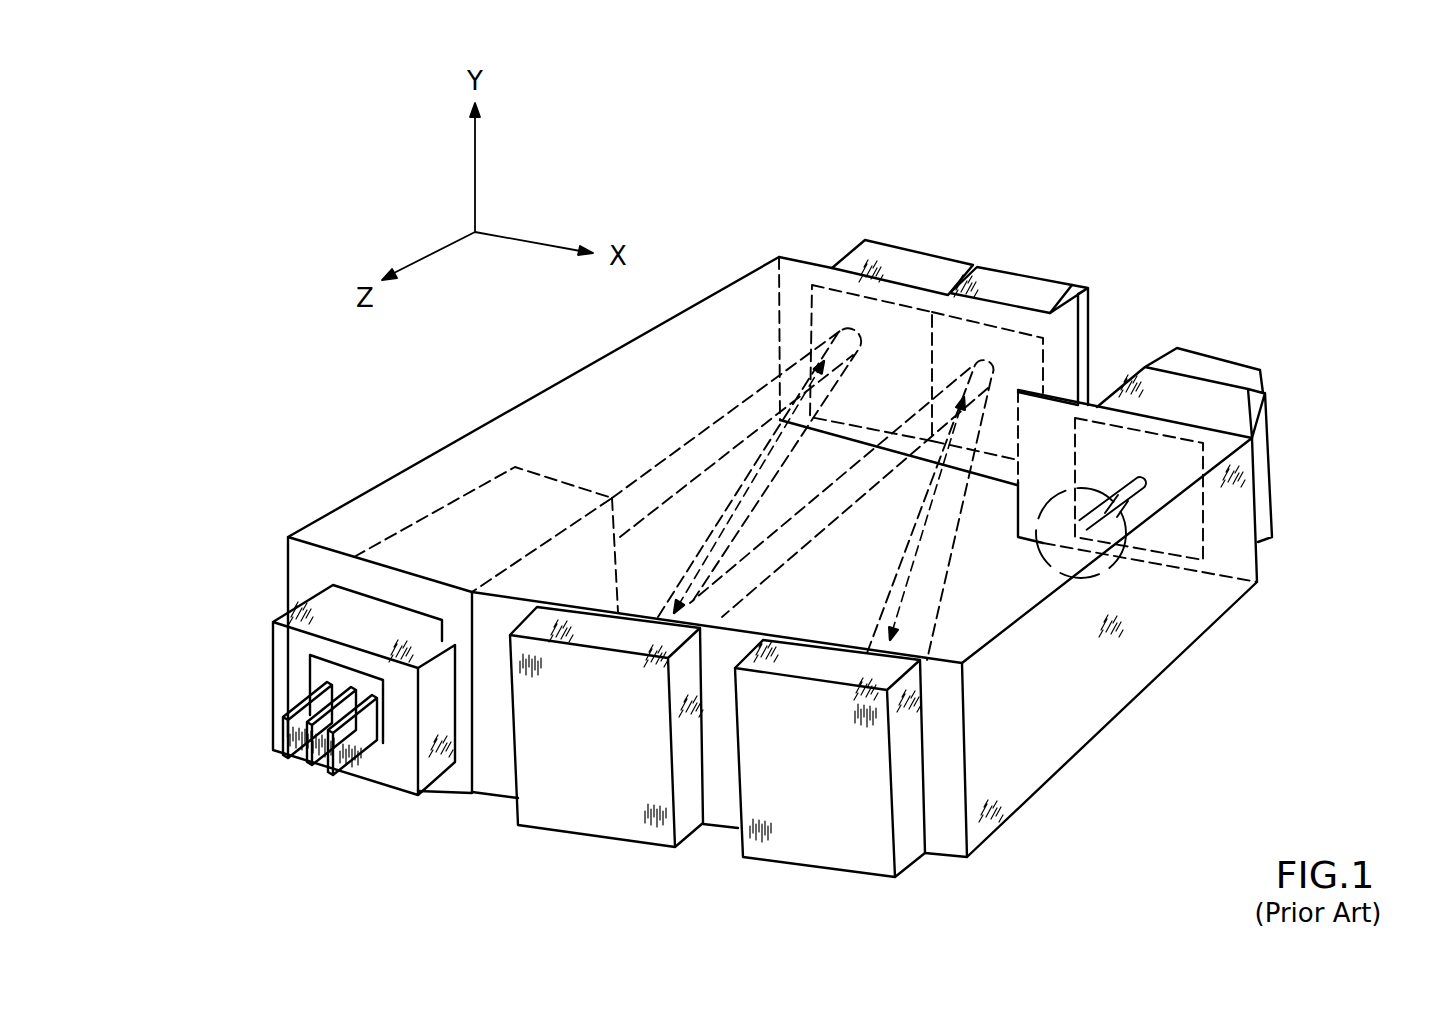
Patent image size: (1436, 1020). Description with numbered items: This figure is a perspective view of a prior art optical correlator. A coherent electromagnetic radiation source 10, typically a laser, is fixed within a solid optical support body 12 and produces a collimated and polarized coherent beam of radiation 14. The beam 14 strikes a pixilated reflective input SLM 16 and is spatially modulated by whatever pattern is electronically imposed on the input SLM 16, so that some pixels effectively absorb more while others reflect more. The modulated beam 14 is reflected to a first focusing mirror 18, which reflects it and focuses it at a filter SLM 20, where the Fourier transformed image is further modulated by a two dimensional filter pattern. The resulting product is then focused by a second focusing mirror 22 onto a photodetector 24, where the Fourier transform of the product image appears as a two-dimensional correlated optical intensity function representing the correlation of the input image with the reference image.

The coherent electromagnetic radiation source 10 is at (310, 660).
The solid optical support body 12 is at (1082, 665).
The coherent beam of radiation 14 is at (675, 437).
The pixilated reflective input SLM 16 is at (900, 322).
The first focusing mirror 18 is at (585, 793).
The filter SLM 20 is at (993, 342).
The second focusing mirror 22 is at (830, 832).
The photodetector 24 is at (1200, 405).